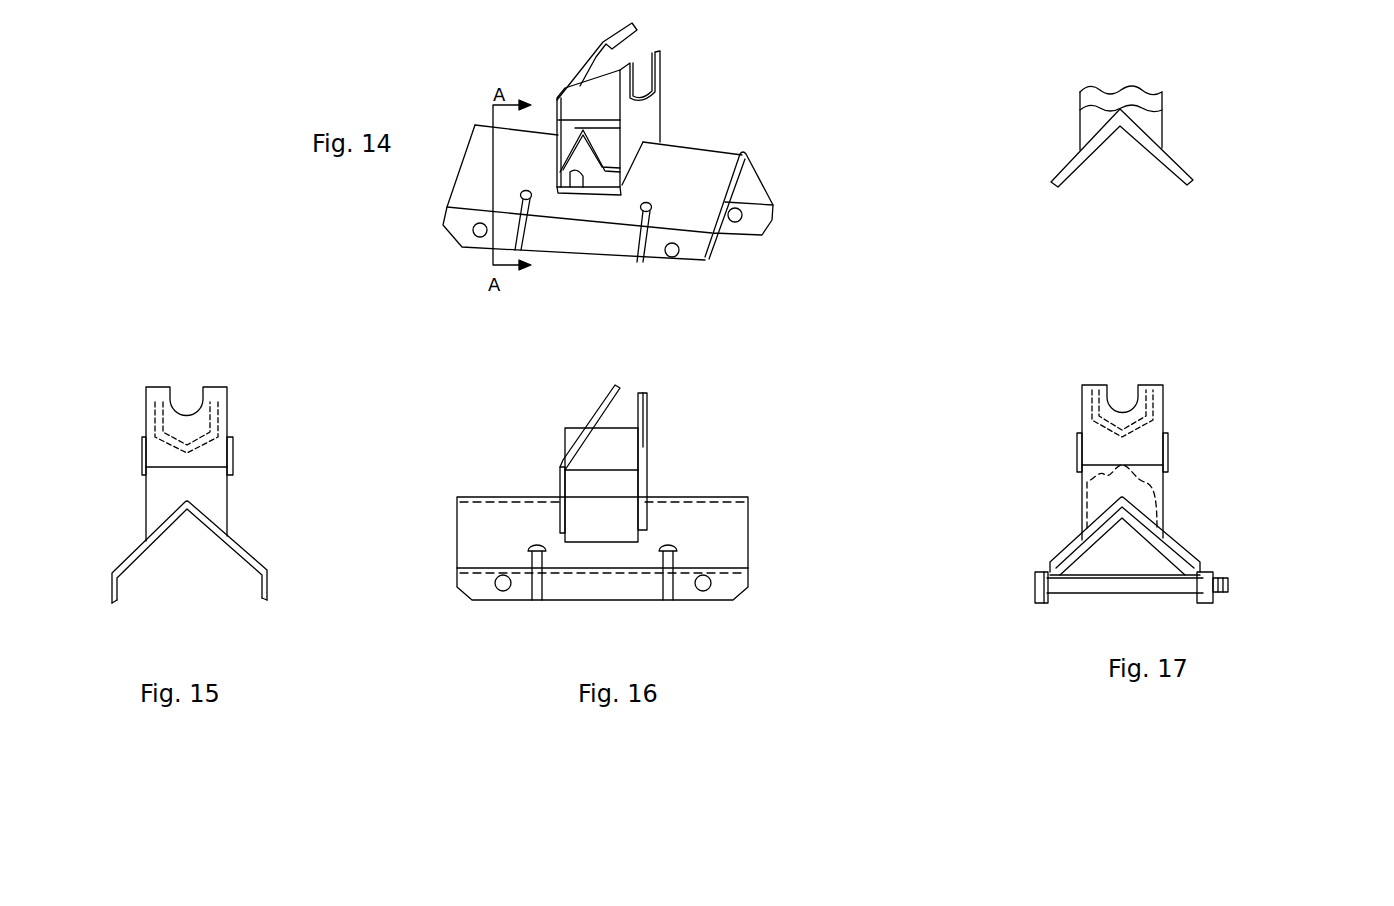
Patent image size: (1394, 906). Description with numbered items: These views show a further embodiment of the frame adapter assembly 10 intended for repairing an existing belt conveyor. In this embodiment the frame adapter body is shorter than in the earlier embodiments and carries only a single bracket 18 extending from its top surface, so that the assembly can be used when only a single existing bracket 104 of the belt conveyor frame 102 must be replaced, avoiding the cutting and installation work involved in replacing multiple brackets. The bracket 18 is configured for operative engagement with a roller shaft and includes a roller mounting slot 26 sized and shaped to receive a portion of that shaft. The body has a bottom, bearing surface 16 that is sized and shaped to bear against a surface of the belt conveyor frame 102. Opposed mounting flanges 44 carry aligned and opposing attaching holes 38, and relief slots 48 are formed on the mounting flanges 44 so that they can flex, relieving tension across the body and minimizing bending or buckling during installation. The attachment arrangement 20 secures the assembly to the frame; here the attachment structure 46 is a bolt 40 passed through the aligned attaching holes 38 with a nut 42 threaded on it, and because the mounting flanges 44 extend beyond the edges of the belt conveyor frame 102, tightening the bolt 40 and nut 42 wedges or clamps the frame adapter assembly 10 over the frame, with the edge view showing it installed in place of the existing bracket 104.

In FIG. 14, the frame adapter assembly 10 is at (614, 169).
In FIG. 16, the frame adapter assembly 10 is at (581, 523).
In FIG. 14, the bottom, bearing surface 16 is at (741, 171).
In FIG. 14, the bracket 18 is at (546, 96).
In FIG. 15, the bracket 18 is at (147, 442).
In FIG. 16, the bracket 18 is at (670, 471).
In FIG. 17, the bracket 18 is at (1193, 424).
In FIG. 17, the attachment arrangement 20 is at (1124, 485).
In FIG. 15, the roller mounting slot 26 is at (187, 402).
In FIG. 14, the attaching hole 38 is at (474, 231).
In FIG. 16, the attaching hole 38 is at (505, 585).
In FIG. 17, the bolt 40 is at (1045, 573).
In FIG. 17, the nut 42 is at (1213, 600).
In FIG. 14, the mounting flange 44 is at (777, 213).
In FIG. 15, the mounting flange 44 is at (253, 607).
In FIG. 16, the mounting flange 44 is at (467, 588).
In FIG. 17, the attachment structure 46 is at (1263, 569).
In FIG. 14, the relief slot 48 is at (630, 248).
In FIG. 16, the relief slot 48 is at (668, 578).
In FIG. 17, the belt conveyor frame 102 is at (1168, 555).
In FIG. 17, the bracket 104 is at (1158, 492).